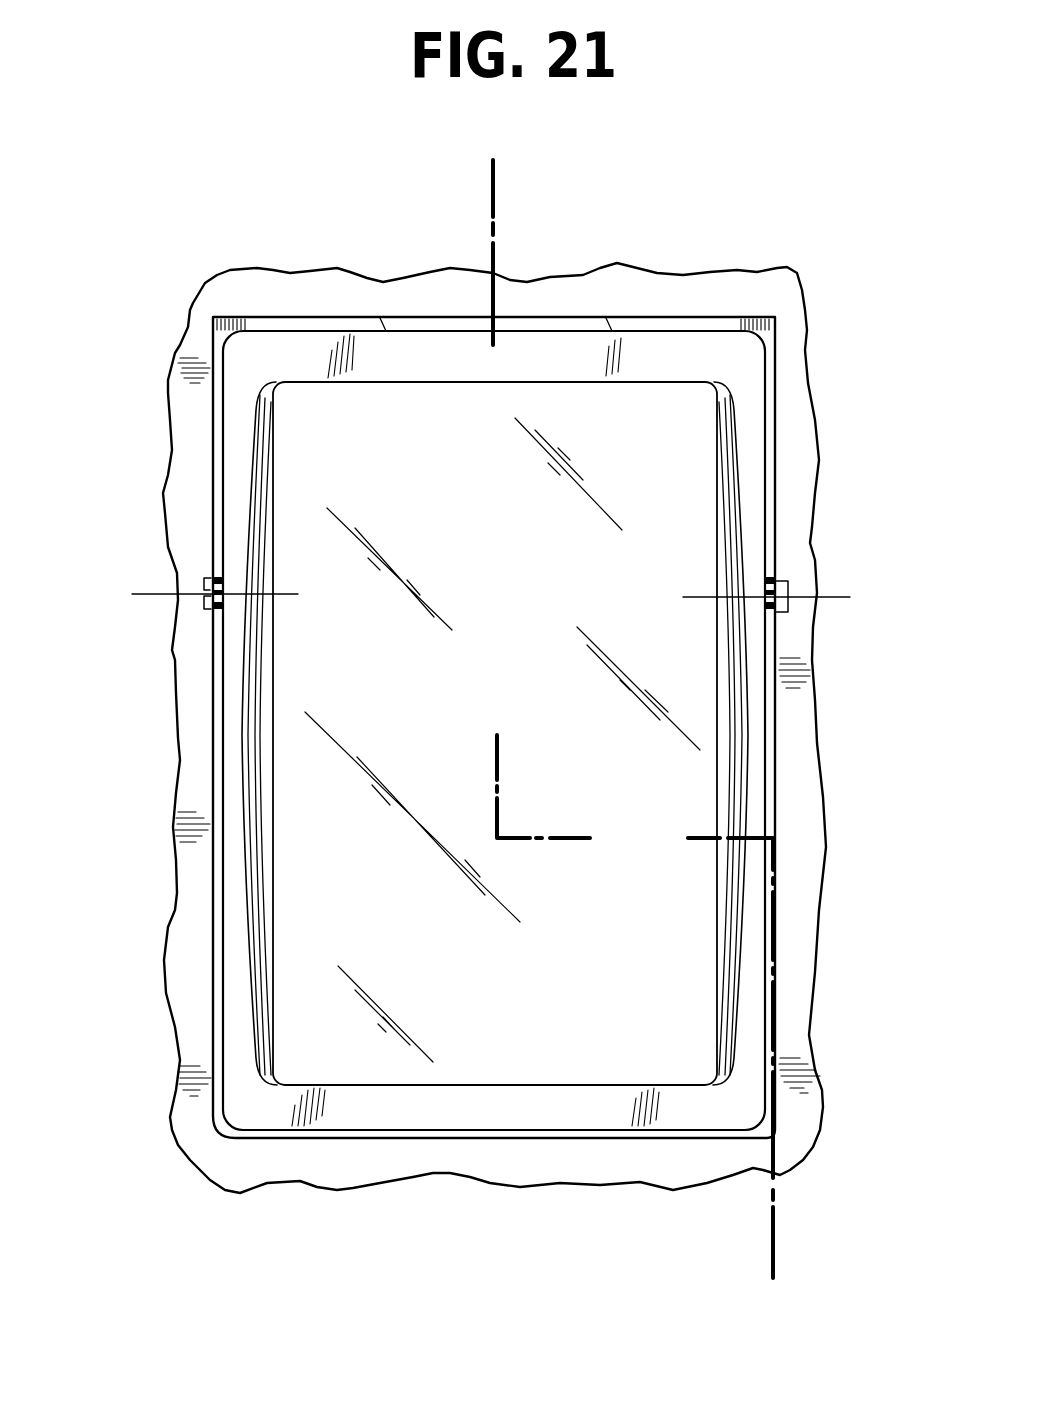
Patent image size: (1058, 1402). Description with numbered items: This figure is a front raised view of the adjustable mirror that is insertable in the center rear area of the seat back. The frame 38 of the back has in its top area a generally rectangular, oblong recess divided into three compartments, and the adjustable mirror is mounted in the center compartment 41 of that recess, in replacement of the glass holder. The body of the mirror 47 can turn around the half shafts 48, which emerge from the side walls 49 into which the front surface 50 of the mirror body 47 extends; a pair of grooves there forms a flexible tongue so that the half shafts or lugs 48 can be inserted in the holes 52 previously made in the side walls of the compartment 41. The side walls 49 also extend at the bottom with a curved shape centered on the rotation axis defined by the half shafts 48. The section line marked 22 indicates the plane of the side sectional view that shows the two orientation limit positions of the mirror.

The section line 22- 22 is at (466, 193).
The frame 38 is at (778, 292).
The center compartment 41 is at (305, 318).
The body of the mirror 47 is at (240, 902).
The half shafts 48 is at (215, 578).
The side walls 49 is at (157, 594).
The front surface 50 is at (387, 1062).
The holes 52 is at (206, 594).